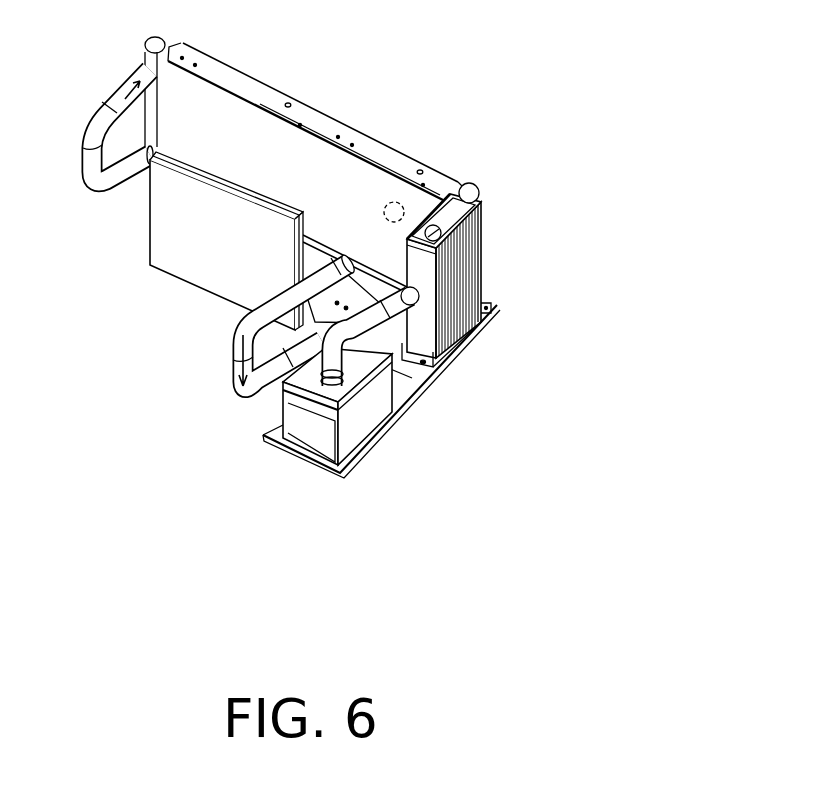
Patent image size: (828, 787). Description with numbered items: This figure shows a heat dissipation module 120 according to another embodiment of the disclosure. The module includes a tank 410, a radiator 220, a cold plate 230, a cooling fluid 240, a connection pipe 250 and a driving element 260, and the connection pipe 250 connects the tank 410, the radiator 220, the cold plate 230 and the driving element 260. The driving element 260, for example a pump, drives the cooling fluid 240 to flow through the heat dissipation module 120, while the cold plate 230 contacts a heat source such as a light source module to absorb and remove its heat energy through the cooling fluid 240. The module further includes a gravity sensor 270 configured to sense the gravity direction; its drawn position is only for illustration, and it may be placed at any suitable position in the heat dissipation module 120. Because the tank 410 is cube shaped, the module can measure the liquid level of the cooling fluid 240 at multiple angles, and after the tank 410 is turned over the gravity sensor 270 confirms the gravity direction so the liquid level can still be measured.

The heat dissipation module 120 is at (375, 291).
The radiator 220 is at (260, 125).
The cold plate 230 is at (195, 268).
The cooling fluid 240 is at (403, 312).
The connection pipe 250 is at (328, 360).
The driving element 260 is at (310, 428).
The gravity sensor 270 is at (396, 202).
The tank 410 is at (467, 263).